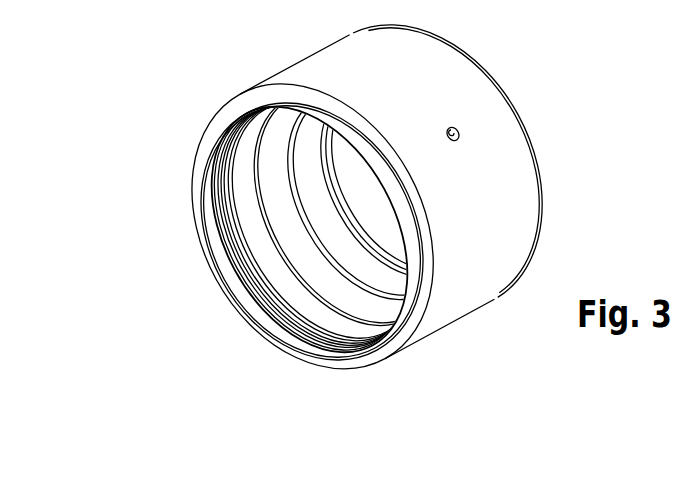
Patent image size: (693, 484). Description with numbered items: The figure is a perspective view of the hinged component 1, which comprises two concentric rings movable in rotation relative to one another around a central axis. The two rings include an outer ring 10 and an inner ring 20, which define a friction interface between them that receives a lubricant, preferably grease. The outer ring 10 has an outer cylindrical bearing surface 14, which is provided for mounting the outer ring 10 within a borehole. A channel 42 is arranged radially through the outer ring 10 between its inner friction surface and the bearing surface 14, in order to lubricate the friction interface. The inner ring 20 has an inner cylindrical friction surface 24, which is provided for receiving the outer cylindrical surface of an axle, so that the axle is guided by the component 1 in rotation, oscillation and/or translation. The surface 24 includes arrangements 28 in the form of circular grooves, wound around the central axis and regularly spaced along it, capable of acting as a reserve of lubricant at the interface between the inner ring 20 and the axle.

The hinged component 1 is at (240, 42).
The outer ring 10 is at (458, 277).
The outer cylindrical bearing surface 14 is at (501, 172).
The inner ring 20 is at (295, 293).
The inner cylindrical friction surface 24 is at (236, 199).
The arrangements 28 is at (256, 240).
The channel 42 is at (471, 116).